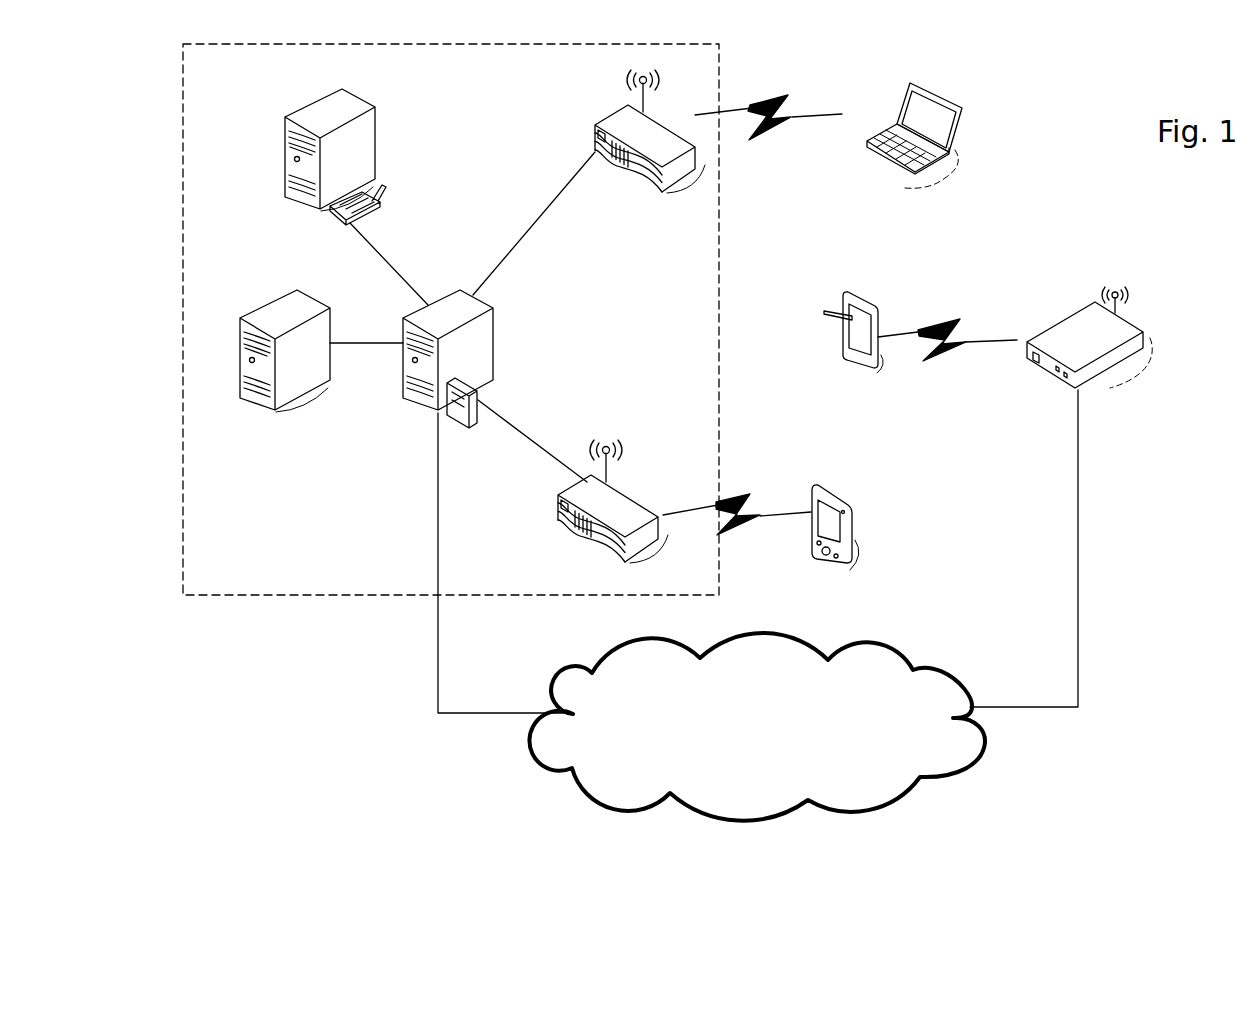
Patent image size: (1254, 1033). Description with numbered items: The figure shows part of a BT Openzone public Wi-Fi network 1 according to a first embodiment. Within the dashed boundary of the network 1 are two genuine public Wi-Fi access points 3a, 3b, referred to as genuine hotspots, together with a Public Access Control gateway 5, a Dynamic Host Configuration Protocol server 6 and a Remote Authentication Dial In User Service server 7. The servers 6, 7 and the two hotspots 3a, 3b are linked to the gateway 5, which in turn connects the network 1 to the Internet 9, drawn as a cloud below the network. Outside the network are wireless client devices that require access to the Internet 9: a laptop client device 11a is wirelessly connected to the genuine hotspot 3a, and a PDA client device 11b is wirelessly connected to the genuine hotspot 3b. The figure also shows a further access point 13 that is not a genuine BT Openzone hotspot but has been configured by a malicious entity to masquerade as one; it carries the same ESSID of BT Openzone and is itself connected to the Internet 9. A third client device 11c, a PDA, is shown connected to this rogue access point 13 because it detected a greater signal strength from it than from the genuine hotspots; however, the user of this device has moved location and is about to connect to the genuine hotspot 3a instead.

The public Wi-Fi network 1 is at (348, 595).
The public Wi-Fi access point 3a is at (595, 127).
The public Wi-Fi access point 3b is at (558, 508).
The Public Access Control gateway 5 is at (448, 296).
The Dynamic Host Configuration Protocol server 6 is at (285, 153).
The Remote Authentication Dial In User Service server 7 is at (273, 302).
The Internet 9 is at (553, 762).
The wireless client device 11a is at (881, 162).
The wireless client device 11b is at (812, 559).
The wireless client device 11c is at (843, 348).
The rogue wireless access point 13 is at (1068, 319).